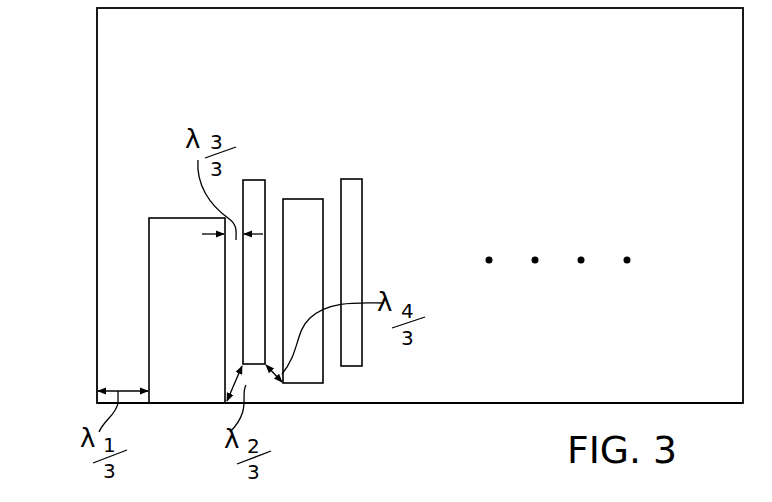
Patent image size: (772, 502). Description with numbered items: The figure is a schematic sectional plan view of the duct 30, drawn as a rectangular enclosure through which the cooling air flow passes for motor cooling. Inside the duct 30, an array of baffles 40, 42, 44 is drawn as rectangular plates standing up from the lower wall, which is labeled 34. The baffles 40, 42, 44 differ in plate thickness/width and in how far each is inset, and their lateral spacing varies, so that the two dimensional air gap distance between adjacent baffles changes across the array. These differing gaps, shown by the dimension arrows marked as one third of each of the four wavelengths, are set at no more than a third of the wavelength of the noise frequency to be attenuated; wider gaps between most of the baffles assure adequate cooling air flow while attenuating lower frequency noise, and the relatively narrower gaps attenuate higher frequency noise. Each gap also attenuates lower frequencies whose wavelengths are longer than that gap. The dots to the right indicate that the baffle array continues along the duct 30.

The duct 30 is at (62, 202).
The substrate surface 34 is at (449, 406).
The baffle 40 is at (178, 387).
The baffle 42 is at (303, 367).
The baffle 44 is at (259, 180).